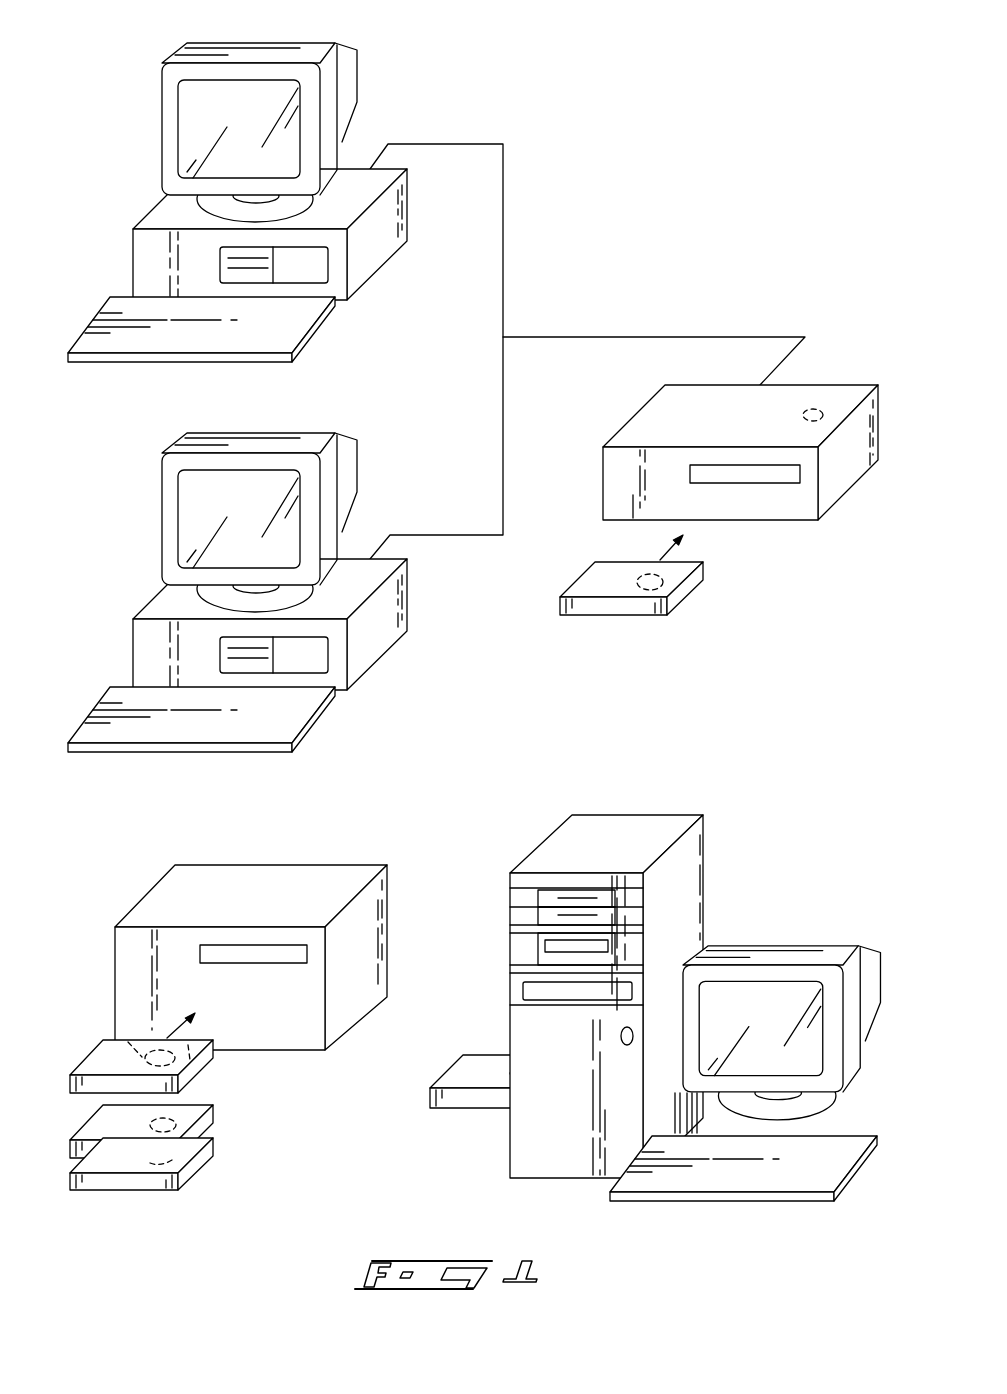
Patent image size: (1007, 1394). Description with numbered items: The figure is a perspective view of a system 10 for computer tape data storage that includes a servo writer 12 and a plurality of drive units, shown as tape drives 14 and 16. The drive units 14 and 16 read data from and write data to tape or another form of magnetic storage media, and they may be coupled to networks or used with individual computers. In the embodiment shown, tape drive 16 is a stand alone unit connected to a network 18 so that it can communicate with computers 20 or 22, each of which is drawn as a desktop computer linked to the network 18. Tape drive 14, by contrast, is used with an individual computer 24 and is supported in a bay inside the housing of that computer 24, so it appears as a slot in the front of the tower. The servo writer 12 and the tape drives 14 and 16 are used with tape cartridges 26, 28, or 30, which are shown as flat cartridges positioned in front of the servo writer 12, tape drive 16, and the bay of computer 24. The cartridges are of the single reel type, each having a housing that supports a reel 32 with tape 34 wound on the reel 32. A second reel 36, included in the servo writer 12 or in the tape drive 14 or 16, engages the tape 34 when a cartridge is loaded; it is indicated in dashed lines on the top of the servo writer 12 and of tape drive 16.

The system 10 is at (125, 60).
The servo writer 12 is at (127, 913).
The tape drive 14 is at (508, 983).
The tape drive 16 is at (612, 430).
The network 18 is at (505, 217).
The computer 20 is at (147, 217).
The computer 22 is at (147, 607).
The computer 24 is at (664, 1002).
The tape cartridge 26 is at (102, 1057).
The tape cartridge 28 is at (688, 590).
The tape cartridge 30 is at (193, 1167).
The reel 32 is at (120, 1038).
The tape 34 is at (212, 1070).
The second reel 36 is at (817, 407).